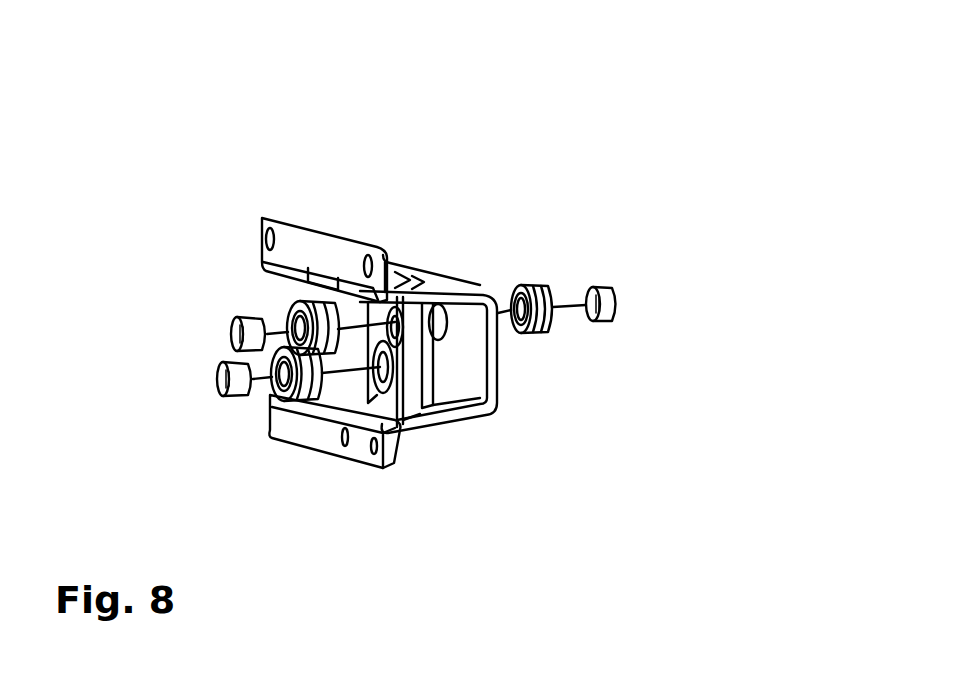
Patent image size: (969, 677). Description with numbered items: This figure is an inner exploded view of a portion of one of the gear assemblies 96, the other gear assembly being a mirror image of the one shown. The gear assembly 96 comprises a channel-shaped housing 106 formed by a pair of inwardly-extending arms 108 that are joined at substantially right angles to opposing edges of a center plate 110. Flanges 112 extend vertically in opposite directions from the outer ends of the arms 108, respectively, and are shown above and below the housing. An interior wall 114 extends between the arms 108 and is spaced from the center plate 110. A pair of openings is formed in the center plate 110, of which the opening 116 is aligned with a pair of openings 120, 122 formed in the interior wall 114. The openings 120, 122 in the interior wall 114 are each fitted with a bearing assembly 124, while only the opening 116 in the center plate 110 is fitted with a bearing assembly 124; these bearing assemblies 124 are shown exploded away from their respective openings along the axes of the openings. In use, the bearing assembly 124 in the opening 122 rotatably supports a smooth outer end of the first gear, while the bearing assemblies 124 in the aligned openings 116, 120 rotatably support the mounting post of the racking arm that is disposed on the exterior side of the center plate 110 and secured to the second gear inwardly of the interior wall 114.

The gear assembly 96 is at (462, 176).
The channel-shaped housing 106 is at (427, 447).
The inwardly-extending arms 108 is at (437, 287).
The center plate 110 is at (481, 351).
The flanges 112 is at (300, 243).
The interior wall 114 is at (440, 392).
The opening 116 is at (450, 300).
The opening 120 is at (420, 300).
The opening 122 is at (407, 372).
The bearing assembly 124 is at (254, 297).